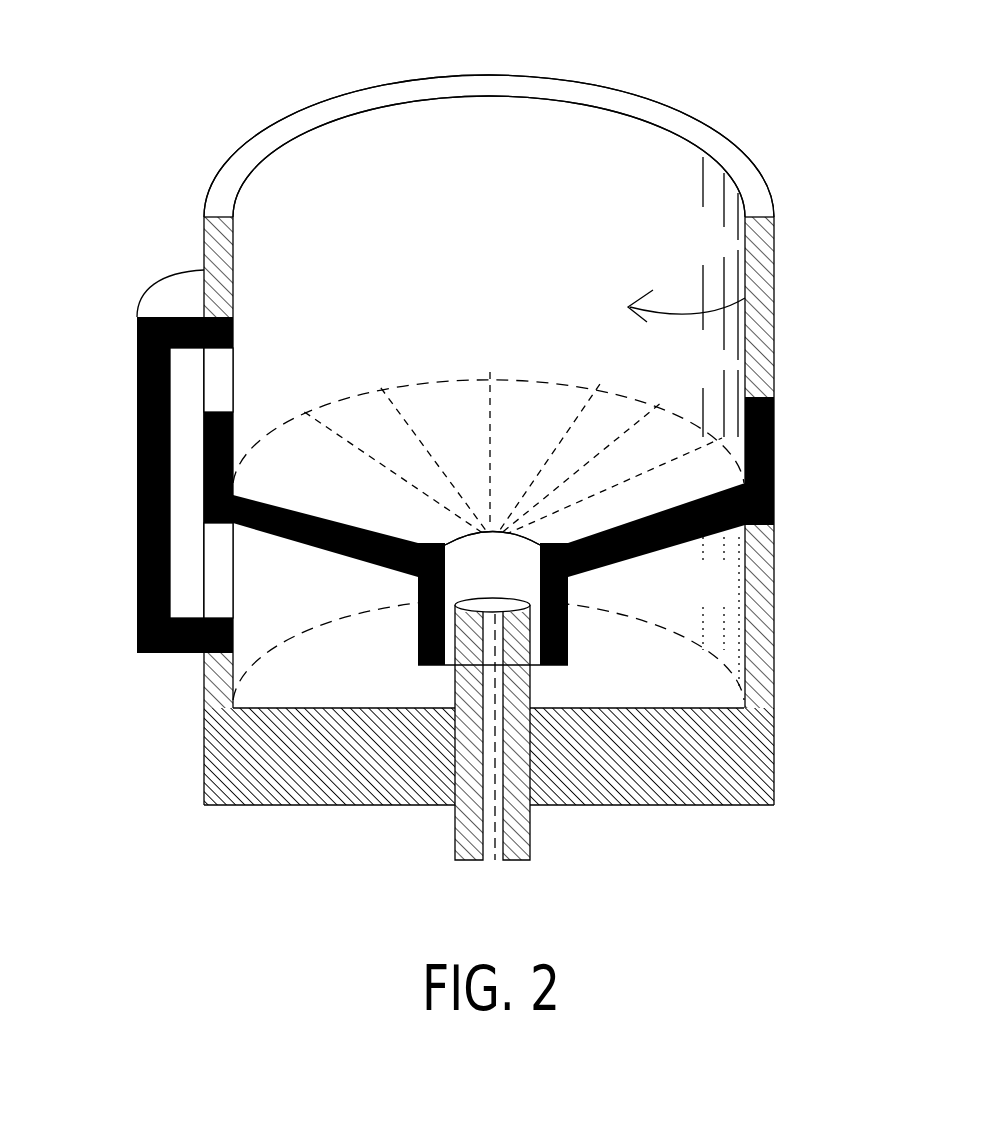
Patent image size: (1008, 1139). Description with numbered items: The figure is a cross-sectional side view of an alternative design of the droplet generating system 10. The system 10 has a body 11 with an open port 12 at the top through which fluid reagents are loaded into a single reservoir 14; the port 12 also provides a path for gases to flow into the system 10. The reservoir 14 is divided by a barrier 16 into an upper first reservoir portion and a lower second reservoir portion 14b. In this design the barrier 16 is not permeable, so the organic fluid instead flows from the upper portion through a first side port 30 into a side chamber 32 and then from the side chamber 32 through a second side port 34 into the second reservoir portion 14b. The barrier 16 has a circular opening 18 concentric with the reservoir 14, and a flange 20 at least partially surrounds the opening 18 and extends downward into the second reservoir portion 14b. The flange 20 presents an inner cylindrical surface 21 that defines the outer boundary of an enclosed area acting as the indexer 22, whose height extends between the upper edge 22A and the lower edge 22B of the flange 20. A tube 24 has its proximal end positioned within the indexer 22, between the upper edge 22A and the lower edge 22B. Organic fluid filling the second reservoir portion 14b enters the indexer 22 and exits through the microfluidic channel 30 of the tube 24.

The droplet generating system 10 is at (183, 156).
The body 11 is at (740, 183).
The open port 12 is at (608, 177).
The reservoir 14 is at (776, 284).
The second reservoir portion 14b is at (290, 667).
The barrier 16 is at (222, 583).
The opening 18 is at (487, 557).
The flange 20 is at (568, 614).
The inner cylindrical surface 21 is at (470, 572).
The indexer 22 is at (497, 580).
The upper edge of the flange 22A is at (480, 530).
The lower edge of the flange 22B is at (557, 668).
The tube 24 is at (447, 740).
The first side port 30 is at (213, 387).
The side chamber 32 is at (187, 510).
The second side port 34 is at (137, 643).